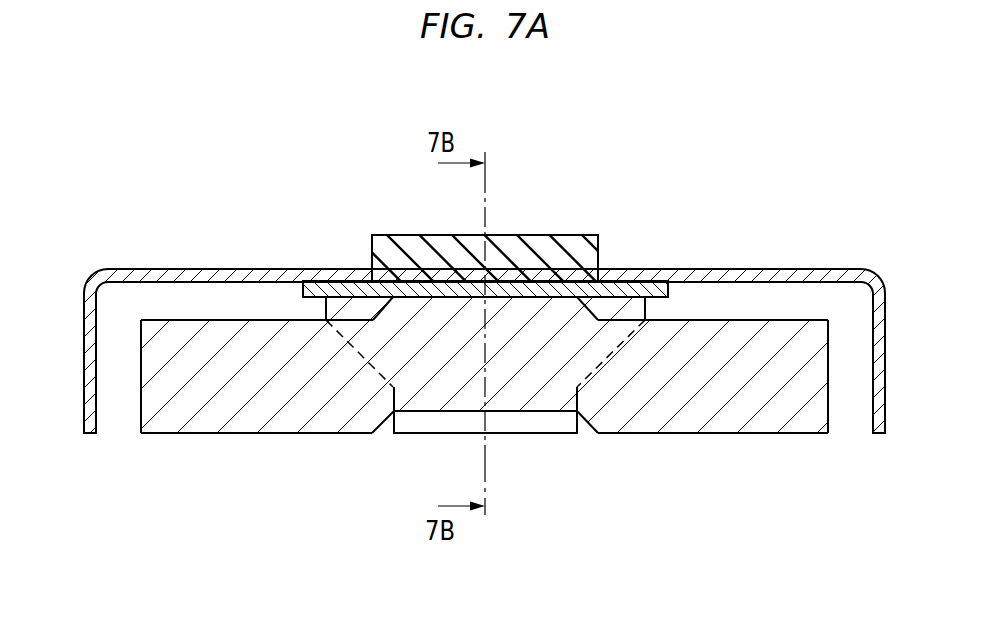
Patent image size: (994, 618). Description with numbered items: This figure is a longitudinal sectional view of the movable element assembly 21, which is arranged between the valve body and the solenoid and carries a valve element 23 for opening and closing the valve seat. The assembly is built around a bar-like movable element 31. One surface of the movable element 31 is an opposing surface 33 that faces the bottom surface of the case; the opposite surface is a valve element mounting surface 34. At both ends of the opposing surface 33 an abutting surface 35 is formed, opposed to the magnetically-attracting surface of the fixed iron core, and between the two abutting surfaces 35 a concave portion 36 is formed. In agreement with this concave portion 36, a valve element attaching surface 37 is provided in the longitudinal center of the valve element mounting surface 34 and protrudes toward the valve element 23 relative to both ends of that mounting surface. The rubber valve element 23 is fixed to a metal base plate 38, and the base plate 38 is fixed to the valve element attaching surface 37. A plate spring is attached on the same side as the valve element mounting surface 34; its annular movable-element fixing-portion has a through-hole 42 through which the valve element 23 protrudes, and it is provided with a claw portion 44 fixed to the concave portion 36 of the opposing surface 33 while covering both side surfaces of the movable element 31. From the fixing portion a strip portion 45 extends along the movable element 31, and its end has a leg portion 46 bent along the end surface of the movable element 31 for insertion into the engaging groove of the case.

The movable element assembly 21 is at (792, 203).
The valve element 23 is at (580, 260).
The movable element 31 is at (196, 398).
The opposing surface 33 is at (314, 447).
The valve element mounting surface 34 is at (220, 306).
The abutting surface 35 is at (240, 434).
The concave portion 36 is at (424, 414).
The valve element attaching surface 37 is at (512, 298).
The base plate 38 is at (641, 288).
The through-hole 42 is at (376, 277).
The claw portion 44 is at (528, 420).
The strip portion 45 is at (737, 276).
The leg portion 46 is at (84, 358).